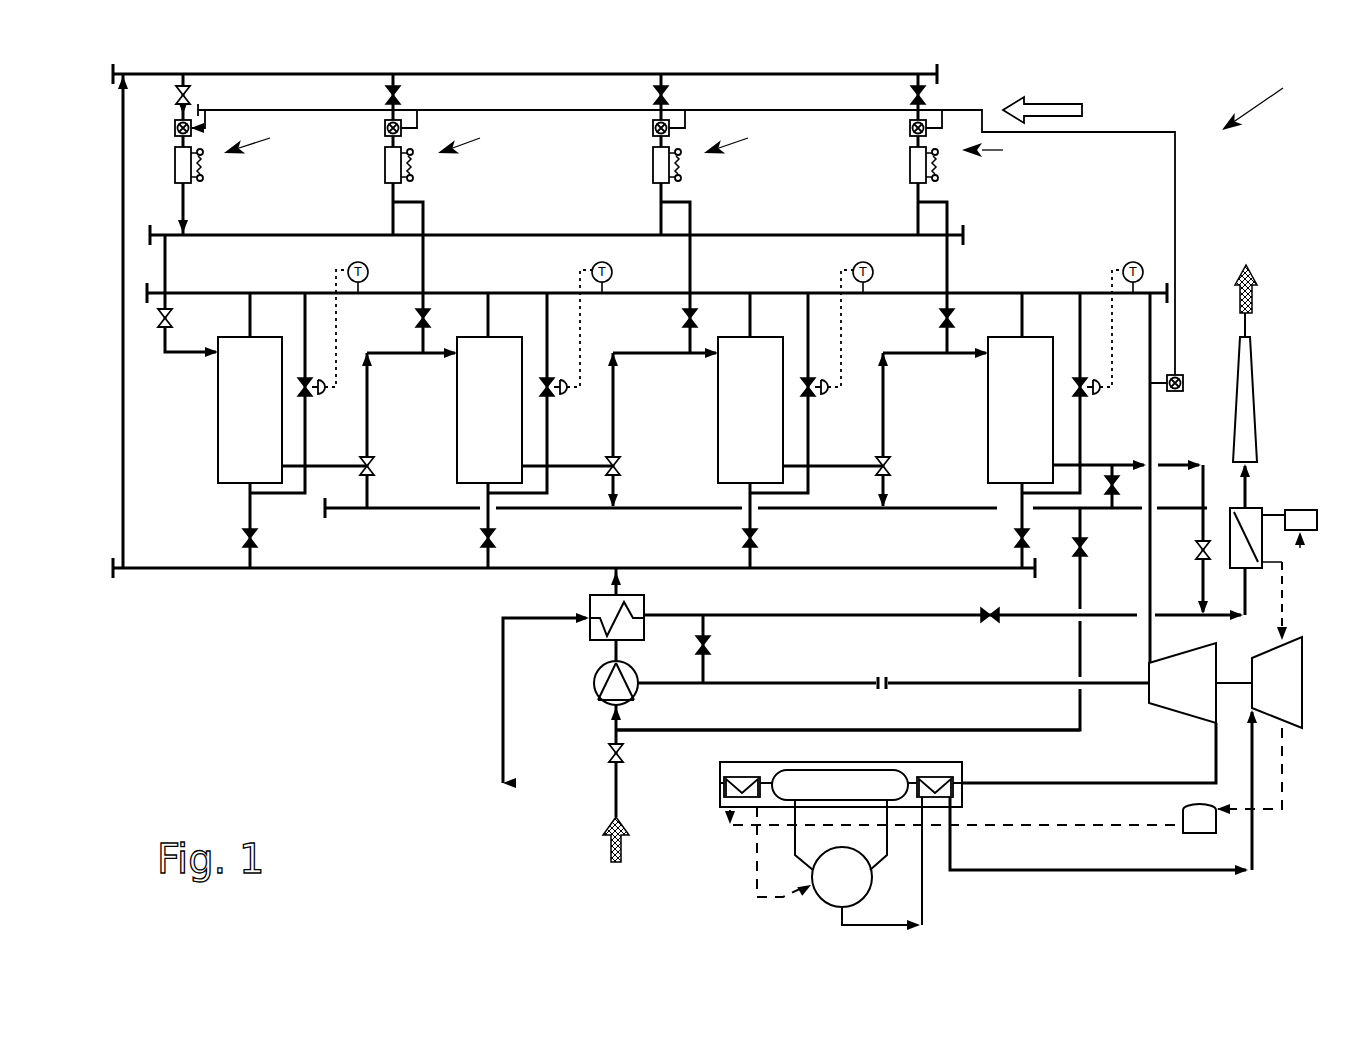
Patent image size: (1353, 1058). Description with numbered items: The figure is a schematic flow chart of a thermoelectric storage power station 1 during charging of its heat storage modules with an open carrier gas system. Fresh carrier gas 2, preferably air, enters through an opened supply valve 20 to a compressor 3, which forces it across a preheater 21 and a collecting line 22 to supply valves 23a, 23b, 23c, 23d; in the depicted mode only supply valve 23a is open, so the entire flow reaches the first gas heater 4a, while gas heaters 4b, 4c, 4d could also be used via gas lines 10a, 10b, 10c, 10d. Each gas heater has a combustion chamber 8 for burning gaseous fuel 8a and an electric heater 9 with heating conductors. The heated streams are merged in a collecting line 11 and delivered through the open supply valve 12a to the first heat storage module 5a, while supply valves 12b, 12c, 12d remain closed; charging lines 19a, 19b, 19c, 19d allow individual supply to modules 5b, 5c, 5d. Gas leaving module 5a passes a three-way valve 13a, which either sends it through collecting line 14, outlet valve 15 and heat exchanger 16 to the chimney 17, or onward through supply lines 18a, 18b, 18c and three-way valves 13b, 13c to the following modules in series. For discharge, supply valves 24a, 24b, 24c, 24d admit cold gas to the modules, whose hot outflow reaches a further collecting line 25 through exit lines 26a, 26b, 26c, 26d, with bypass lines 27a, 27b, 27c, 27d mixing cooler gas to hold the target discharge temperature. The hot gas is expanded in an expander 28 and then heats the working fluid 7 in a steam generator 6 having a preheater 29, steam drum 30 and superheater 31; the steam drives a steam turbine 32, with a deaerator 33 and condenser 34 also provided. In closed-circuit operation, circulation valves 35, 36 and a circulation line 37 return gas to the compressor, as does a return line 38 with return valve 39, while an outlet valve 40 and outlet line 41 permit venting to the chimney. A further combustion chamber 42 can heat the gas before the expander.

The thermoelectric storage power station 1 is at (1258, 105).
The carrier gas 2 is at (1258, 280).
The compressor 3 is at (594, 683).
The gas heater 4a is at (260, 141).
The gas heater 4b is at (472, 141).
The gas heater 4c is at (739, 141).
The gas heater 4d is at (997, 140).
The heat storage module 5a is at (263, 421).
The heat storage module 5b is at (502, 421).
The heat storage module 5c is at (762, 421).
The heat storage module 5d is at (1033, 421).
The steam generator 6 is at (720, 770).
The working fluid 7 is at (1093, 873).
The combustion chamber 8 is at (172, 128).
The gaseous fuel 8a is at (1057, 118).
The electric heater 9 is at (174, 176).
The gas line 10a is at (190, 92).
The gas line 10b is at (405, 92).
The gas line 10c is at (677, 92).
The gas line 10d is at (932, 92).
The collecting line 11 is at (283, 233).
The supply valve 12a is at (158, 318).
The supply valve 12b is at (428, 312).
The supply valve 12c is at (696, 312).
The supply valve 12d is at (953, 312).
The three-way valve 13a is at (370, 462).
The three-way valve 13b is at (621, 462).
The three-way valve 13c is at (890, 462).
The collecting line 14 is at (405, 512).
The outlet valve 15 is at (1197, 554).
The heat exchanger 16 is at (1250, 505).
The chimney 17 is at (1245, 382).
The supply line 18a is at (394, 360).
The supply line 18b is at (646, 360).
The supply line 18c is at (912, 360).
The charging line 19a is at (165, 263).
The charging line 19b is at (425, 216).
The charging line 19c is at (693, 216).
The charging line 19d is at (950, 216).
The supply valve 20 is at (606, 752).
The preheater 21 is at (588, 618).
The collecting line 22 is at (279, 84).
The supply valve 23a is at (178, 96).
The supply valve 23b is at (393, 96).
The supply valve 23c is at (661, 96).
The supply valve 23d is at (918, 96).
The supply valve 24a is at (243, 540).
The supply valve 24b is at (481, 542).
The supply valve 24c is at (743, 540).
The supply valve 24d is at (1013, 540).
The collecting line 25 is at (197, 289).
The exit line 26a is at (252, 316).
The exit line 26b is at (491, 316).
The exit line 26c is at (754, 316).
The exit line 26d is at (1025, 316).
The bypass line 27a is at (270, 498).
The bypass line 27b is at (512, 498).
The bypass line 27c is at (792, 498).
The bypass line 27d is at (1085, 330).
The expander 28 is at (1250, 712).
The preheater 29 is at (730, 790).
The steam drum 30 is at (893, 786).
The superheater 31 is at (953, 787).
The steam turbine 32 is at (1302, 715).
The deaerator 33 is at (1198, 835).
The condenser 34 is at (1300, 508).
The circulation valve 35 is at (1114, 476).
The circulation valve 36 is at (1088, 550).
The circulation line 37 is at (712, 730).
The return line 38 is at (703, 622).
The return valve 39 is at (710, 647).
The outlet valve 40 is at (975, 620).
The outlet line 41 is at (812, 618).
The combustion chamber 42 is at (1181, 392).